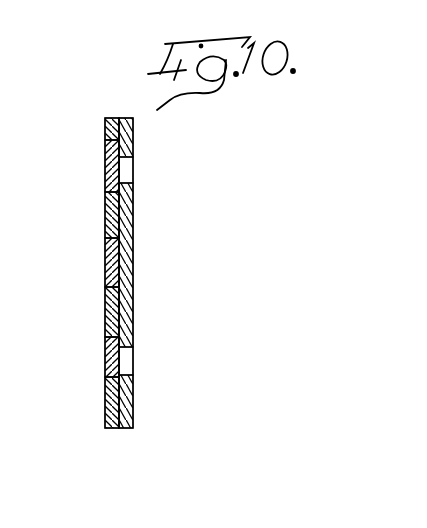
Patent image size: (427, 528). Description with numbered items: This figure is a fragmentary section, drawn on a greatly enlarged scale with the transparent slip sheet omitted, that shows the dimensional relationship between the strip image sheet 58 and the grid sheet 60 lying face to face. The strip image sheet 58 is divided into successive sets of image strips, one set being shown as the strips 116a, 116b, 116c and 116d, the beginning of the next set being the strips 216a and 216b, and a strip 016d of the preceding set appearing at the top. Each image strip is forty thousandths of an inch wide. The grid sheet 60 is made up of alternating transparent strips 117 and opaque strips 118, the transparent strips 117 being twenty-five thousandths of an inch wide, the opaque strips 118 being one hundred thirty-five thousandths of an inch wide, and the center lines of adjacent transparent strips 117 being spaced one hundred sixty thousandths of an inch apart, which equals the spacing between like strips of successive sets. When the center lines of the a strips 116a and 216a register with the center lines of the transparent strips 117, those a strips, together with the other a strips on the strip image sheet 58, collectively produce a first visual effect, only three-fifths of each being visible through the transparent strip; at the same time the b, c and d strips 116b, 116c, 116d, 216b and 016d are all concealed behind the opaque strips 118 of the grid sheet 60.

The image strip 016d is at (108, 140).
The image strip 116a is at (108, 176).
The image strip 116b is at (108, 223).
The image strip 116c is at (108, 268).
The image strip 116d is at (108, 318).
The image strip 216a is at (108, 367).
The image strip 216b is at (108, 408).
The transparent strip 117 is at (125, 175).
The opaque strip 118 is at (133, 140).
The strip image sheet 58 is at (112, 429).
The grid sheet 60 is at (128, 429).